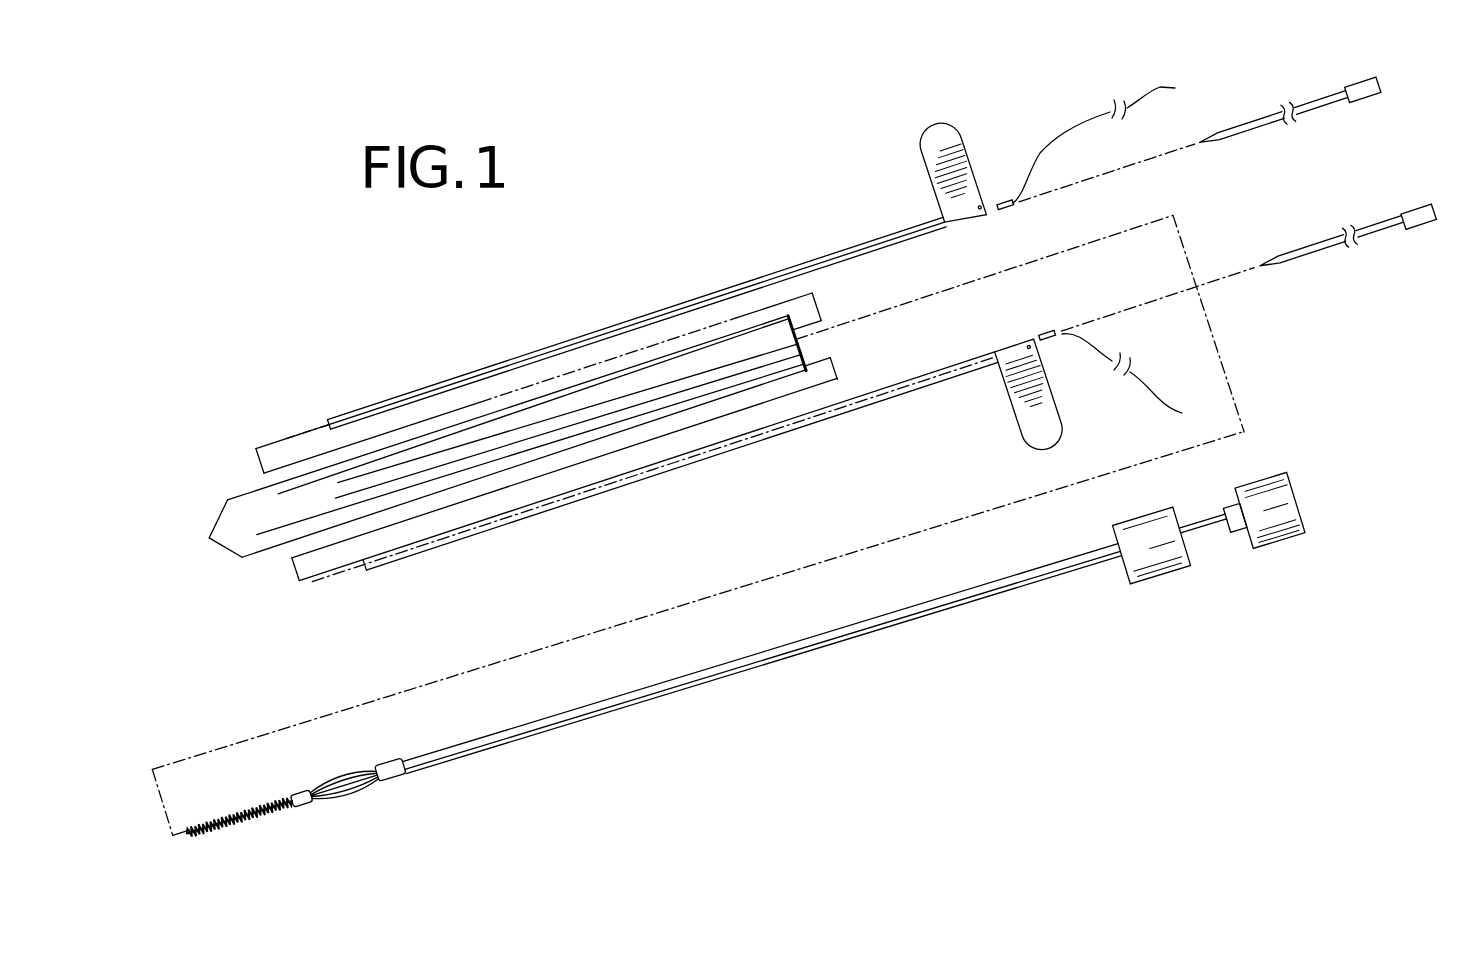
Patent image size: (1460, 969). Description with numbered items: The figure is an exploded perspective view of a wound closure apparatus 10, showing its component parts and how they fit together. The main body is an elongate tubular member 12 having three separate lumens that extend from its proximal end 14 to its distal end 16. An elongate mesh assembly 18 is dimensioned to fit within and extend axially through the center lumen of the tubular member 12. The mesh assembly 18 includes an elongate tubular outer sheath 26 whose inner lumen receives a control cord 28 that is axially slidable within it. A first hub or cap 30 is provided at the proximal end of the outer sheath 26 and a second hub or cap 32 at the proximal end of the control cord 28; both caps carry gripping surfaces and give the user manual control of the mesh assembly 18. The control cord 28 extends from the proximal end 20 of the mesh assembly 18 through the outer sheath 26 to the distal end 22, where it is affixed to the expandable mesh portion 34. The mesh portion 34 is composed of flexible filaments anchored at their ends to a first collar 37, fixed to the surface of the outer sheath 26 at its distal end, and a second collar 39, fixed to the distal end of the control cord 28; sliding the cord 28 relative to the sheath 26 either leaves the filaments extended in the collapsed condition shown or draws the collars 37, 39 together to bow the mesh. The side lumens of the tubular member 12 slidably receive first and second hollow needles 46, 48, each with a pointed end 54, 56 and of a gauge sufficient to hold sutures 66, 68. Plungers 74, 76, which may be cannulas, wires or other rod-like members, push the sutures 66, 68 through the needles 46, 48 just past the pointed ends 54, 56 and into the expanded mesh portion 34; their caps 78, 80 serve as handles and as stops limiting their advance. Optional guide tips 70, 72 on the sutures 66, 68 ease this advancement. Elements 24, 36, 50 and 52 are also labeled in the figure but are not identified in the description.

The wound closure apparatus 10 is at (472, 313).
The elongate tubular member 12 is at (242, 508).
The proximal end 14 is at (806, 352).
The distal end 16 is at (212, 548).
The elongate mesh assembly 18 is at (722, 738).
The proximal end of the mesh assembly 20 is at (1327, 489).
The distal end of the mesh assembly 22 is at (148, 792).
The shaft 24 is at (861, 652).
The outer sheath 26 is at (894, 618).
The control cord 28 is at (1211, 534).
The first hub or cap 30 is at (1152, 527).
The second hub or cap 32 is at (1284, 503).
The expandable mesh portion 34 is at (362, 795).
The bristles 36 is at (248, 806).
The first collar 37 is at (400, 762).
The second collar 39 is at (305, 795).
The first needle 46 is at (650, 316).
The second needle 48 is at (678, 456).
The upper finger grip 50 is at (950, 130).
The lower finger grip 52 is at (1050, 428).
The pointed end 54 is at (334, 424).
The pointed end 56 is at (374, 561).
The suture 66 is at (1178, 88).
The suture 68 is at (1180, 412).
The guide tip 70 is at (1006, 215).
The guide tip 72 is at (1063, 335).
The plunger 74 is at (1318, 115).
The plunger 76 is at (1378, 230).
The cap 78 is at (1364, 90).
The cap 80 is at (1419, 210).